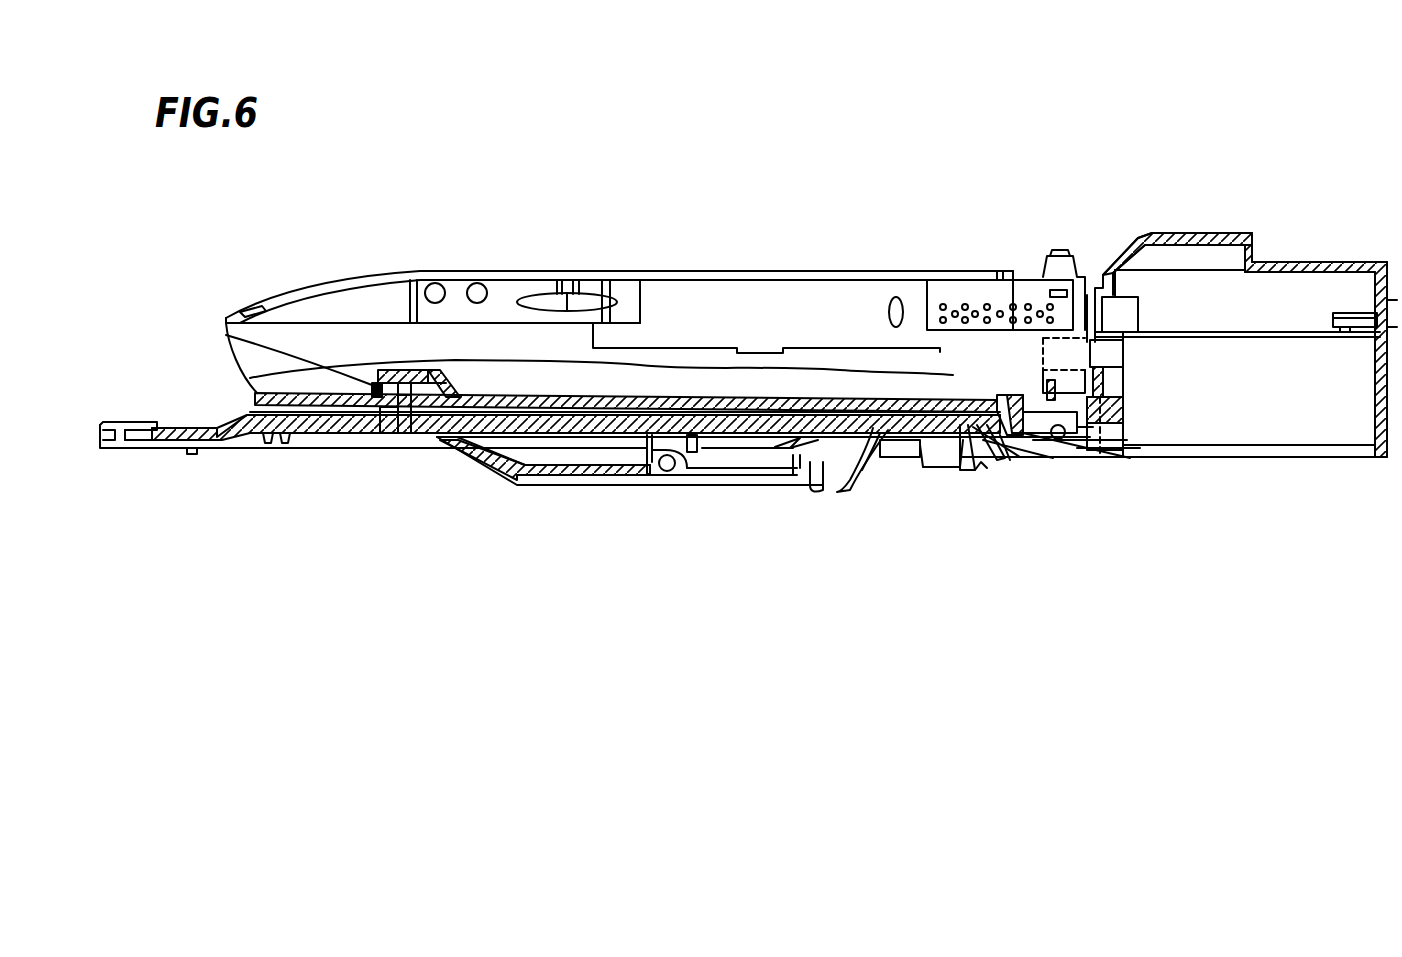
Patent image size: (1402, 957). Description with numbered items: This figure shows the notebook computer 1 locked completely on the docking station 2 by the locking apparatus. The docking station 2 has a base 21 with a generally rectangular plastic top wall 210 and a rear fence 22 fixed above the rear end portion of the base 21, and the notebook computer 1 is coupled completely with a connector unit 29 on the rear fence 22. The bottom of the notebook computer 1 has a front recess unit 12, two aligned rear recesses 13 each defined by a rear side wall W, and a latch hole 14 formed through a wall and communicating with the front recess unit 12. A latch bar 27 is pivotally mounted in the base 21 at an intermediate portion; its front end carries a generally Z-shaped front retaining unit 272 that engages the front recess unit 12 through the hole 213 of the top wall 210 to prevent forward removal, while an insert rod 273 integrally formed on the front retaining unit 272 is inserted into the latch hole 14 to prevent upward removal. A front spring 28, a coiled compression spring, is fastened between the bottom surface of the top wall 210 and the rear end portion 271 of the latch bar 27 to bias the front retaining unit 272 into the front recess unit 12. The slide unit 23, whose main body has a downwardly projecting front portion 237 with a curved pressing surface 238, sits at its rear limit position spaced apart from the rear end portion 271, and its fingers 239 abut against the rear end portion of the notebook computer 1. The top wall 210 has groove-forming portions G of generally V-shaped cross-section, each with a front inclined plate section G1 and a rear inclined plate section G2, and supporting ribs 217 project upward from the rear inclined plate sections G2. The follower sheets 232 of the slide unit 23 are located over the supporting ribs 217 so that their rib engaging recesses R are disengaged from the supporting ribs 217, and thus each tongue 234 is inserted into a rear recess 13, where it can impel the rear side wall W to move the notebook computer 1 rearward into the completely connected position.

The notebook computer 1 is at (478, 258).
The docking station 2 is at (1342, 252).
The front recess unit 12 is at (404, 385).
The rear recesses 13 is at (970, 398).
The latch hole 14 is at (383, 380).
The base 21 is at (160, 407).
The rear fence 22 is at (1270, 290).
The slide unit 23 is at (1097, 417).
The latch bar 27 is at (483, 490).
The front spring 28 is at (772, 447).
The connector unit 29 is at (1127, 313).
The top wall 210 is at (168, 449).
The hole 213 is at (375, 428).
The supporting ribs 217 is at (1017, 462).
The follower sheets 232 is at (1010, 398).
The tongue 234 is at (1000, 393).
The front portion 237 is at (862, 487).
The curved pressing surface 238 is at (837, 490).
The finger 239 is at (1098, 385).
The rear end portion 271 is at (813, 492).
The front retaining unit 272 is at (398, 410).
The insert rod 273 is at (372, 385).
The rear side wall W is at (987, 377).
The rib engaging recess R is at (1050, 442).
The groove-forming portions G is at (978, 480).
The front inclined plate section G1 is at (958, 468).
The rear inclined plate section G2 is at (985, 470).